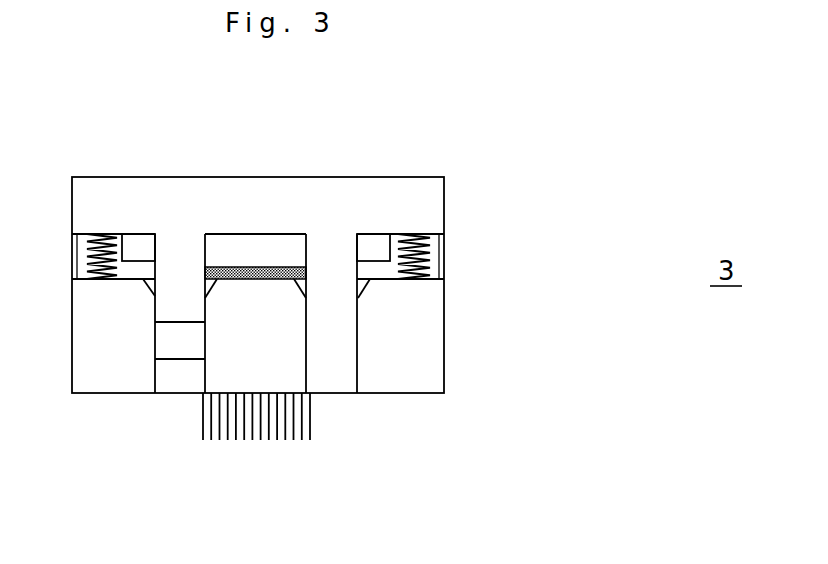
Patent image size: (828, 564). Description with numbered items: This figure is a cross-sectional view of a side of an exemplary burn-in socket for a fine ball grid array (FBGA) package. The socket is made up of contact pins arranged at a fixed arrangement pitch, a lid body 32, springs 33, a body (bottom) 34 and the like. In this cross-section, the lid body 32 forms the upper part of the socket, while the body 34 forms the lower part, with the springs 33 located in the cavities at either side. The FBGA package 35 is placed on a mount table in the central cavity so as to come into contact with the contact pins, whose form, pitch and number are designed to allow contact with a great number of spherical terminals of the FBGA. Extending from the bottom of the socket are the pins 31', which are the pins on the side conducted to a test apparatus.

The pins 31' is at (411, 428).
The lid body 32 is at (422, 200).
The springs 33 is at (428, 250).
The body (bottom) 34 is at (445, 343).
The FBGA package 35 is at (260, 270).